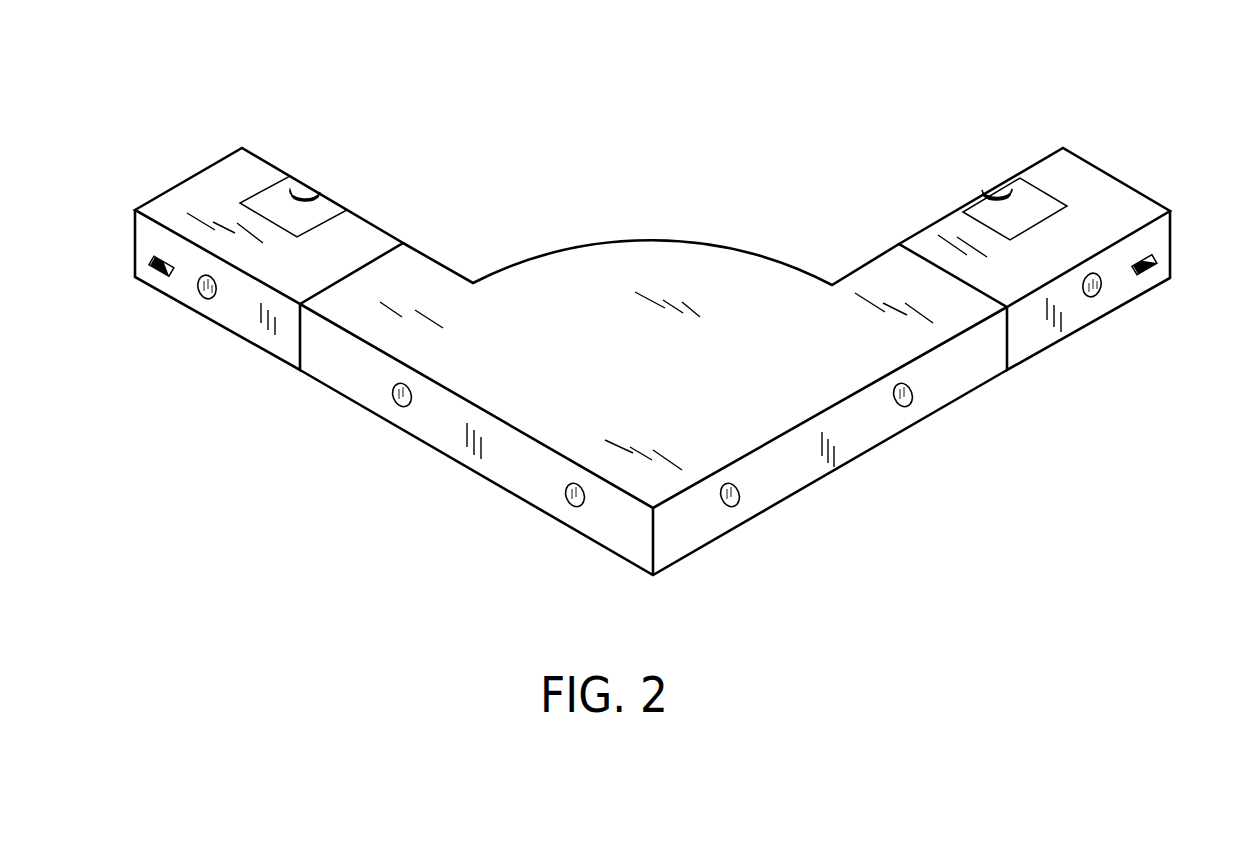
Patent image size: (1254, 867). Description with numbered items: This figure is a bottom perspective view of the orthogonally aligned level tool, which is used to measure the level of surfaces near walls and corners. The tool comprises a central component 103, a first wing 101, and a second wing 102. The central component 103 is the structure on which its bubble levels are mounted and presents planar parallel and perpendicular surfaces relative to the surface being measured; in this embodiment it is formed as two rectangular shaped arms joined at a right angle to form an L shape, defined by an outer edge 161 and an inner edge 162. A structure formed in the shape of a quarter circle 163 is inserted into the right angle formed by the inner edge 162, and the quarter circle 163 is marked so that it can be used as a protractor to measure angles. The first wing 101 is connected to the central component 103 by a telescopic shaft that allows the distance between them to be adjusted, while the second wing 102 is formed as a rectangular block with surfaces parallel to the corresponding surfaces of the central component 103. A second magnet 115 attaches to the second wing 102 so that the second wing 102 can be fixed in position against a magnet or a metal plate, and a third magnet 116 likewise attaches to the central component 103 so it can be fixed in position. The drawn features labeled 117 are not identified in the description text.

The first wing 101 is at (187, 178).
The second wing 102 is at (1132, 188).
The central component 103 is at (767, 408).
The second magnet 115 is at (205, 287).
The third magnet 116 is at (1097, 288).
The holes 117 is at (572, 502).
The outer edge 161 is at (913, 425).
The inner edge 162 is at (866, 263).
The quarter circle 163 is at (650, 265).